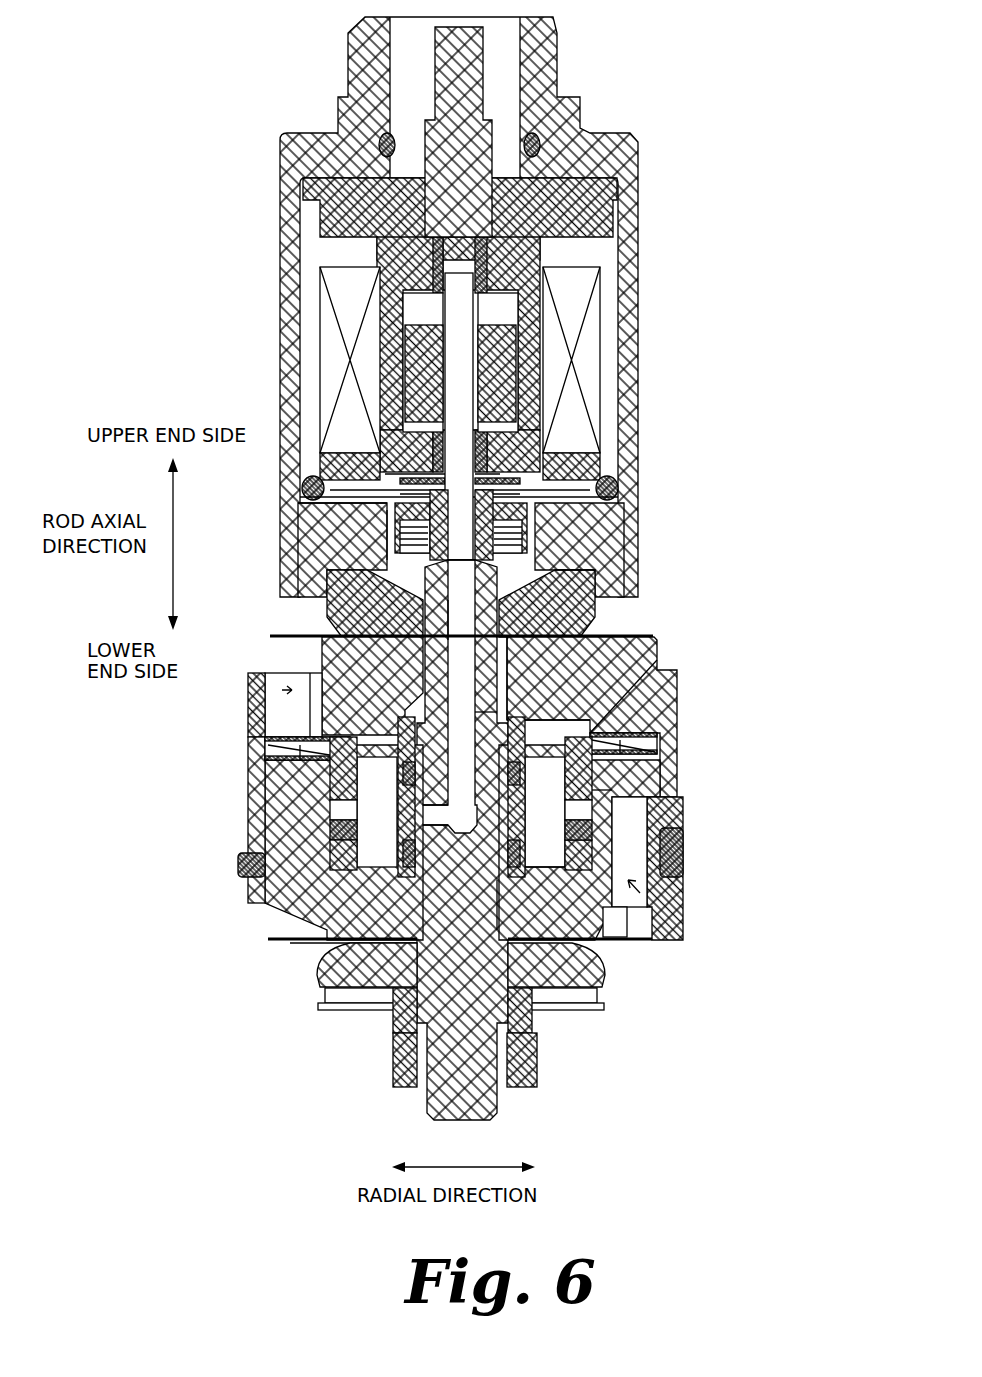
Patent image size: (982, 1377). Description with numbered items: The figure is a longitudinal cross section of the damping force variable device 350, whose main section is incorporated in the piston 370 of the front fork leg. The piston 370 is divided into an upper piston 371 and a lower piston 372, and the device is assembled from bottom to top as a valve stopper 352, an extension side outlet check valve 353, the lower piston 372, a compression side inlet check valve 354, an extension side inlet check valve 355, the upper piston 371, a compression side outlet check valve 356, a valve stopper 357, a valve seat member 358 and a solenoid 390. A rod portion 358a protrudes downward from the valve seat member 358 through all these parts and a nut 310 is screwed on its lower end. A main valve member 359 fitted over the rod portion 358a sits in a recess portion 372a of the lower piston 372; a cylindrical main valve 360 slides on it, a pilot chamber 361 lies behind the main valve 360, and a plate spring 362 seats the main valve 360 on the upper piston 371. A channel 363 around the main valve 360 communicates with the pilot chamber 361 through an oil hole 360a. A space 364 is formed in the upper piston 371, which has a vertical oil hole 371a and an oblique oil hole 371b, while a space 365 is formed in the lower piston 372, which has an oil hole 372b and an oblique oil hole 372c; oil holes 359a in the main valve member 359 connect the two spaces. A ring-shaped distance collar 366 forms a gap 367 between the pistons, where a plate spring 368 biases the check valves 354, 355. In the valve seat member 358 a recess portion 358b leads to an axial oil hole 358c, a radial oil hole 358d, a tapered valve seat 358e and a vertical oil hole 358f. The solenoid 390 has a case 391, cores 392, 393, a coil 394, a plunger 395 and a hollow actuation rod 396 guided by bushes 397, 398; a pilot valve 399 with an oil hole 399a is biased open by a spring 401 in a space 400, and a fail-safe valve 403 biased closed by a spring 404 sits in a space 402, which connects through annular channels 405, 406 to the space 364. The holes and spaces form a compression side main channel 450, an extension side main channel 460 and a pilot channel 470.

The damping force variable device 350 is at (462, 568).
The solenoid 390 is at (455, 327).
The case 391 is at (285, 358).
The core 392 is at (632, 458).
The core 393 is at (395, 312).
The coil 394 is at (603, 346).
The plunger 395 is at (402, 386).
The actuation rod 396 is at (470, 312).
The guide bush 397 is at (440, 280).
The guide bush 398 is at (488, 455).
The pilot valve 399 is at (560, 478).
The oil hole 399a is at (372, 545).
The space 400 is at (512, 548).
The spring 401 is at (527, 541).
The space 402 is at (520, 486).
The fail-safe valve 403 is at (408, 485).
The spring 404 is at (410, 480).
The channel 405 is at (343, 610).
The channel 406 is at (333, 633).
The pilot channel 470 is at (590, 575).
The valve seat member 358 is at (630, 540).
The rod portion 358a is at (497, 920).
The recess portion 358b is at (446, 558).
The oil hole 358c is at (480, 716).
The oil hole 358d is at (470, 828).
The valve seat 358e is at (490, 598).
The oil hole 358f is at (360, 527).
The valve stopper 357 is at (340, 583).
The piston 370 is at (462, 842).
The upper piston 371 is at (660, 688).
The oil hole 371a is at (285, 680).
The oil hole 371b is at (578, 660).
The compression side outlet check valve 356 is at (592, 652).
The extension side inlet check valve 355 is at (268, 748).
The compression side inlet check valve 354 is at (650, 757).
The gap 367 is at (300, 758).
The plate spring 368 is at (655, 742).
The distance collar 366 is at (250, 705).
The channel 363 is at (340, 775).
The space 364 is at (548, 760).
The space 365 is at (385, 868).
The main valve 360 is at (598, 812).
The oil hole 360a is at (340, 808).
The pilot chamber 361 is at (527, 895).
The plate spring 362 is at (335, 830).
The main valve member 359 is at (265, 888).
The oil hole 359a is at (563, 886).
The lower piston 372 is at (675, 832).
The recess portion 372a is at (598, 795).
The oil hole 372b is at (637, 905).
The oil hole 372c is at (328, 940).
The main channel 450 is at (642, 893).
The main channel 460 is at (280, 688).
The extension side outlet check valve 353 is at (620, 940).
The valve stopper 352 is at (330, 977).
The nut 310 is at (398, 1063).